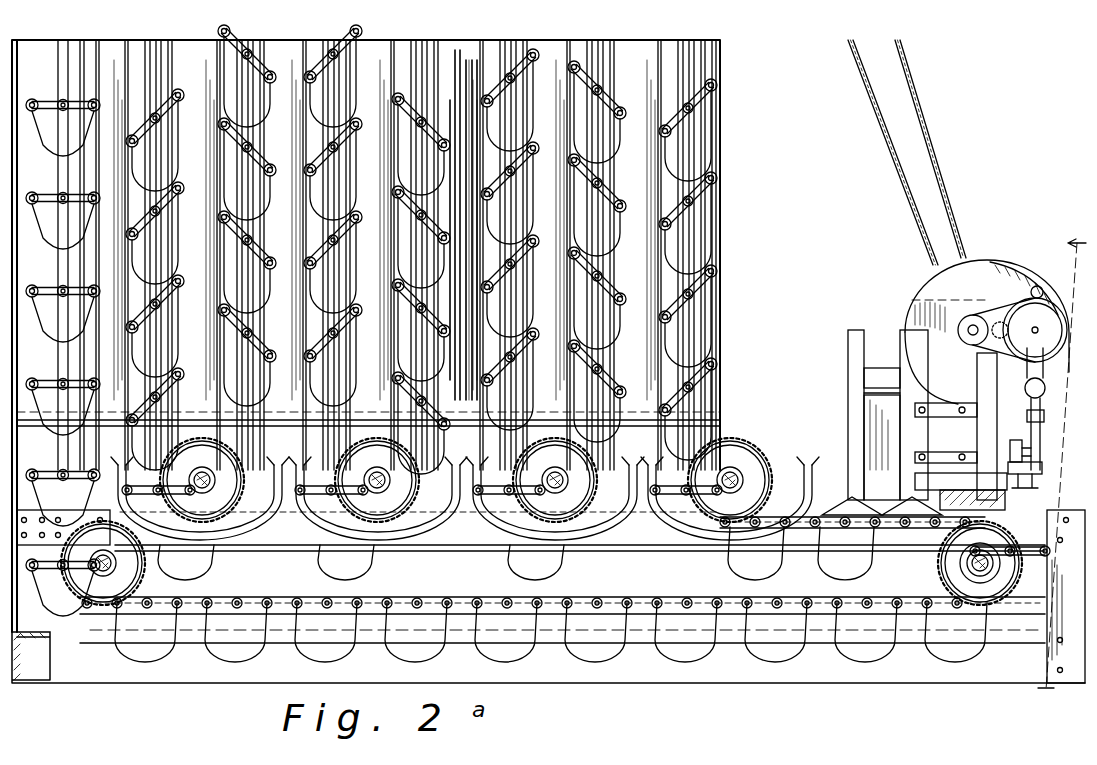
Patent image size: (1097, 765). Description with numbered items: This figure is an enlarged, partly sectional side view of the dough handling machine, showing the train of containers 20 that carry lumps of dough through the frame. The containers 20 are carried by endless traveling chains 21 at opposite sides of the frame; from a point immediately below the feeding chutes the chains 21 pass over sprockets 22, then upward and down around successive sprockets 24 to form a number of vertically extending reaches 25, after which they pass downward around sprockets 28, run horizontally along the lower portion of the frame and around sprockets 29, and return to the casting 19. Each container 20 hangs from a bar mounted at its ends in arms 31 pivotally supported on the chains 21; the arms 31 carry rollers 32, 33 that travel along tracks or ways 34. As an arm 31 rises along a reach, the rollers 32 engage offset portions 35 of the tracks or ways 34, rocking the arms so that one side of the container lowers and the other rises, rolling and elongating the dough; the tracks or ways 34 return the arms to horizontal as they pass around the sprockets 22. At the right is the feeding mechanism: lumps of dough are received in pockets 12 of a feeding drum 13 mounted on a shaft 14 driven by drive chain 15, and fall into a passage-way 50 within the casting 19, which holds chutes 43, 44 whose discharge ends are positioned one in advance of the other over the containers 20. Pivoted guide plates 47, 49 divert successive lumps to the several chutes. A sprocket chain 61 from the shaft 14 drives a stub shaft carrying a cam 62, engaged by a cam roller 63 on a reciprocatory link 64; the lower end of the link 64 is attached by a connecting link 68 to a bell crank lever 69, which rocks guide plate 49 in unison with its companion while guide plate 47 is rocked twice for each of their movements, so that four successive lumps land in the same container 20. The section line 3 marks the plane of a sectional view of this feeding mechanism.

The section line 3- 3 is at (1062, 466).
The pocket 12 is at (987, 332).
The feeding drum 13 is at (995, 262).
The shaft 14 is at (960, 333).
The drive chain 15 is at (958, 214).
The casting 19 is at (850, 502).
The container 20 is at (945, 566).
The endless traveling chain 21 is at (800, 518).
The sprocket 22 is at (738, 448).
The sprocket 24 is at (553, 403).
The vertically extending reach 25 is at (262, 263).
The sprocket 28 is at (130, 566).
The sprocket 29 is at (962, 578).
The arm 31 is at (579, 255).
The roller 32 is at (718, 318).
The roller 33 is at (706, 276).
The track 34 is at (640, 216).
The offset portion 35 is at (128, 375).
The chute 43 is at (912, 505).
The chute 44 is at (961, 482).
The guide plate 47 is at (872, 377).
The guide plate 49 is at (870, 427).
The passage-way 50 is at (876, 346).
The sprocket chain 61 is at (1033, 323).
The cam 62 is at (1046, 388).
The cam roller 63 is at (1047, 282).
The reciprocatory link 64 is at (1045, 416).
The connecting link 68 is at (1044, 450).
The bell crank lever 69 is at (1018, 446).